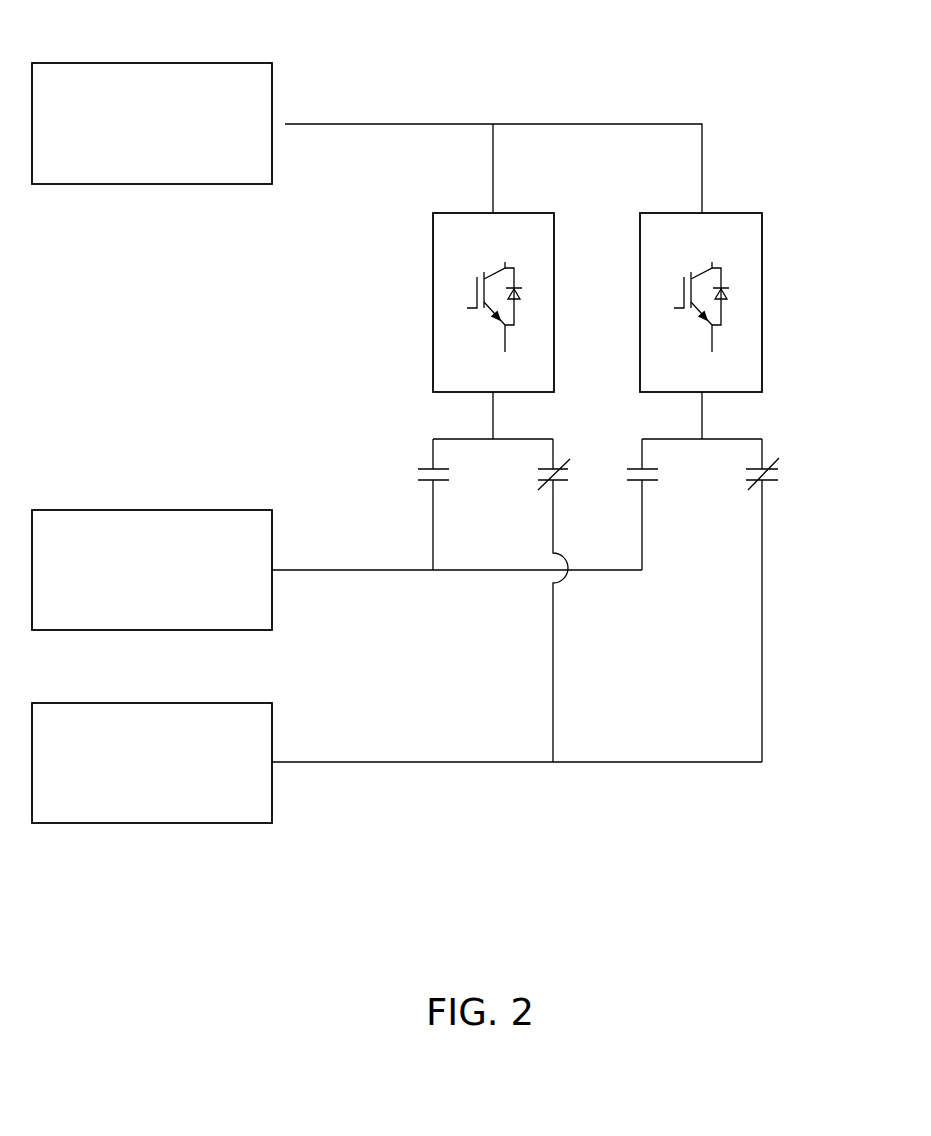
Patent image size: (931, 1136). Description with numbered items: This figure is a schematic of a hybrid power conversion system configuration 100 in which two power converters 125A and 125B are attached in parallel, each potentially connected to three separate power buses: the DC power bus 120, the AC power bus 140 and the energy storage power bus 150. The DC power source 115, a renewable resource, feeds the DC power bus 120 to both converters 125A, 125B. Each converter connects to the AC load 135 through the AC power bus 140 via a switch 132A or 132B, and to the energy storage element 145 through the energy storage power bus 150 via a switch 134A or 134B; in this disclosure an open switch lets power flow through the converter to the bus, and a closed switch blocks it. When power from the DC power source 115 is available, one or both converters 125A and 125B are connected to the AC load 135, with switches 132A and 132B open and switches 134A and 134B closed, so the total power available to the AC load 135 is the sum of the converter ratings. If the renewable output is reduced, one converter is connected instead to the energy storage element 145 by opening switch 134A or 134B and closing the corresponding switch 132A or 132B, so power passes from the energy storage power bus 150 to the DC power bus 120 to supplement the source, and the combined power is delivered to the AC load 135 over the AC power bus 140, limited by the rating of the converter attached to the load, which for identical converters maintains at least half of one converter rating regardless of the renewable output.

The configuration 100 is at (365, 822).
The DC power source 115 is at (137, 62).
The DC power bus 120 is at (343, 124).
The first converter 125A is at (520, 213).
The second converter 125B is at (730, 213).
The first AC switch 132A is at (430, 465).
The second AC switch 132B is at (637, 465).
The first storage switch 134A is at (560, 486).
The second storage switch 134B is at (766, 486).
The AC load 135 is at (128, 510).
The AC power bus 140 is at (302, 568).
The energy storage element 145 is at (105, 703).
The energy storage power bus 150 is at (292, 760).